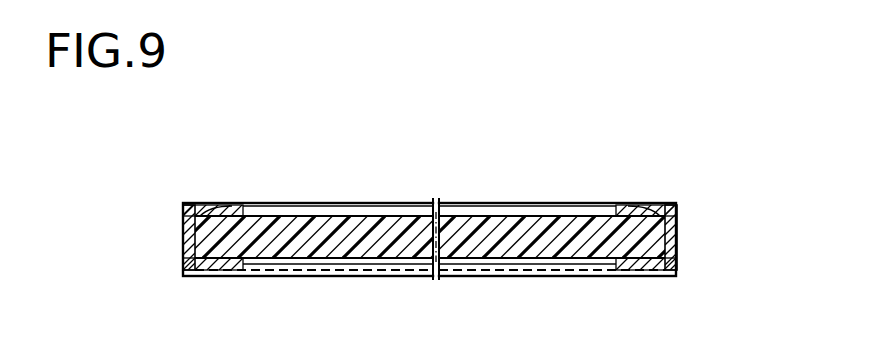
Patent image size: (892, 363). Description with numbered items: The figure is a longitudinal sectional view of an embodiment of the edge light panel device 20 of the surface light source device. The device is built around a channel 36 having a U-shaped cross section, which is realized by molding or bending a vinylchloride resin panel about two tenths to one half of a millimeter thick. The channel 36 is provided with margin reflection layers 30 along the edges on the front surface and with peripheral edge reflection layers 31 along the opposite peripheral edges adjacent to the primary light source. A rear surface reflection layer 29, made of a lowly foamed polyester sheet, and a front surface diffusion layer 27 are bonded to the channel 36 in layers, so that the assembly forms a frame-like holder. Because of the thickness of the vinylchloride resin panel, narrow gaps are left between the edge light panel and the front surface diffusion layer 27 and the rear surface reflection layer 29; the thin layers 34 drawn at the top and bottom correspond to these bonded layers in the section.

The edge light panel device 20 is at (648, 293).
The surface diffusion layer 27 is at (508, 208).
The rear surface reflection layer 29 is at (512, 275).
The margin reflection layer 30 is at (185, 230).
The peripheral edge reflection layer 31 is at (108, 192).
The adhesive layer 34 is at (328, 210).
The channel 36 is at (426, 224).